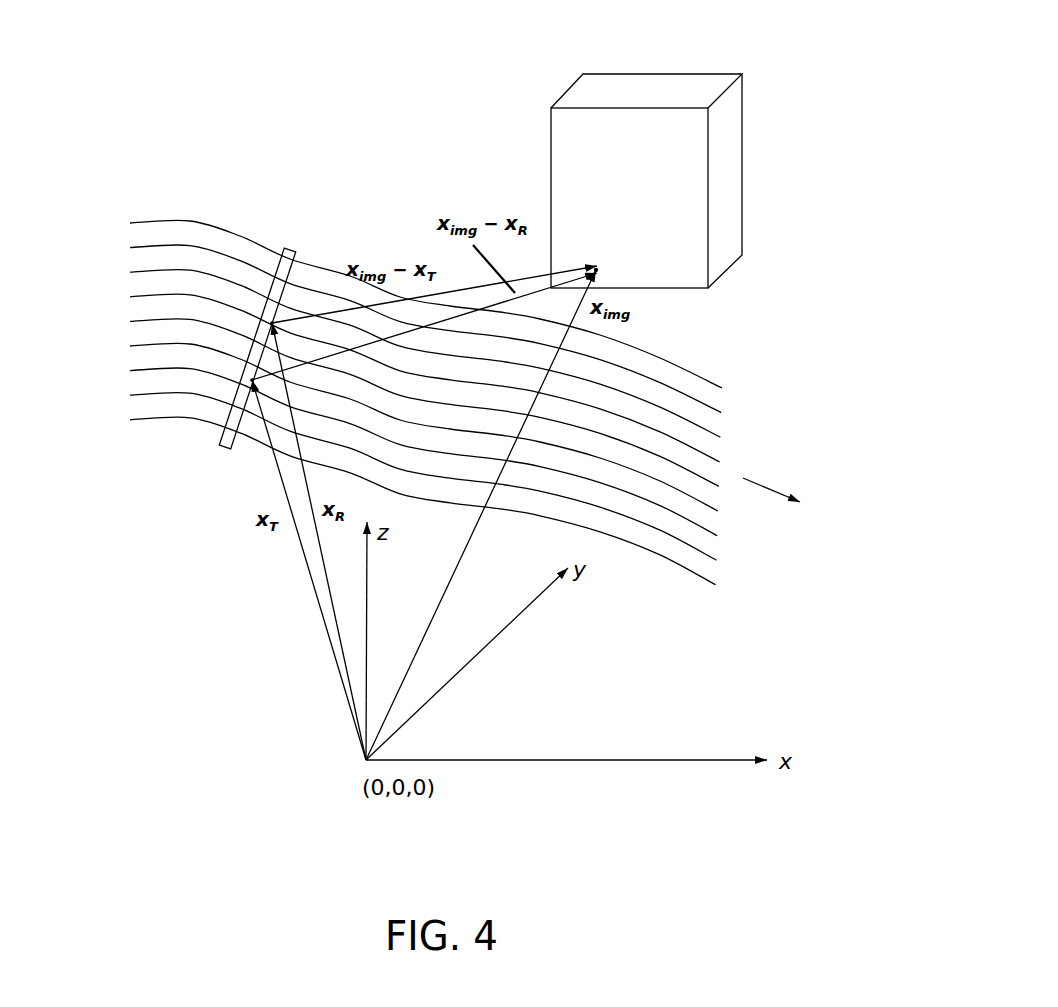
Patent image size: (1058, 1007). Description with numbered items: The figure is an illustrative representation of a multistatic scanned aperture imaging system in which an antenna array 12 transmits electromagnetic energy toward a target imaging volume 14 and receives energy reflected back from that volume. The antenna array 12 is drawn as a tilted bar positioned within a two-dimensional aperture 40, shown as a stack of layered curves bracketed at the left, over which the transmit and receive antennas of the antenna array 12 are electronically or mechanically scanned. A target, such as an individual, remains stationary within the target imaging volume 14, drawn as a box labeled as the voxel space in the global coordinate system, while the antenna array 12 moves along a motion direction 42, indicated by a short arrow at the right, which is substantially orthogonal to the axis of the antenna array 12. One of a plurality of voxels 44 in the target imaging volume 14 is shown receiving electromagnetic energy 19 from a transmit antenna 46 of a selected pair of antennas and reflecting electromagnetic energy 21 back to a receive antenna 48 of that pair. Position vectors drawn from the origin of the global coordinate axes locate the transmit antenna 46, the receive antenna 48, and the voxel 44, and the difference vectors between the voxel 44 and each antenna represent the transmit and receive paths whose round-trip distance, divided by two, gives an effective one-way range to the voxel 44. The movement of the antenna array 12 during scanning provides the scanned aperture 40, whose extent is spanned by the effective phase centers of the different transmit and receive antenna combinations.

The antenna array 12 is at (290, 247).
The target imaging volume 14 is at (647, 90).
The electromagnetic energy 19 is at (457, 285).
The reflections of the electromagnetic energy 21 is at (540, 283).
The two-dimensional aperture 40 is at (111, 225).
The motion direction 42 is at (773, 490).
The voxel 44 is at (598, 268).
The transmit antenna 46 is at (268, 292).
The receive antenna 48 is at (256, 383).